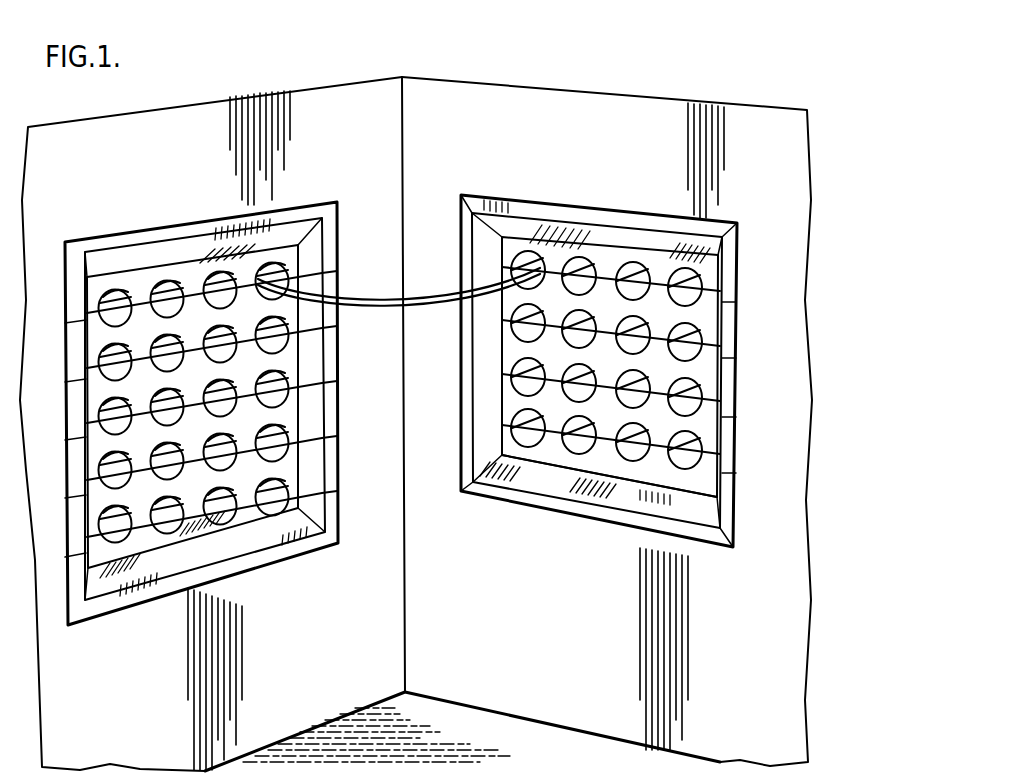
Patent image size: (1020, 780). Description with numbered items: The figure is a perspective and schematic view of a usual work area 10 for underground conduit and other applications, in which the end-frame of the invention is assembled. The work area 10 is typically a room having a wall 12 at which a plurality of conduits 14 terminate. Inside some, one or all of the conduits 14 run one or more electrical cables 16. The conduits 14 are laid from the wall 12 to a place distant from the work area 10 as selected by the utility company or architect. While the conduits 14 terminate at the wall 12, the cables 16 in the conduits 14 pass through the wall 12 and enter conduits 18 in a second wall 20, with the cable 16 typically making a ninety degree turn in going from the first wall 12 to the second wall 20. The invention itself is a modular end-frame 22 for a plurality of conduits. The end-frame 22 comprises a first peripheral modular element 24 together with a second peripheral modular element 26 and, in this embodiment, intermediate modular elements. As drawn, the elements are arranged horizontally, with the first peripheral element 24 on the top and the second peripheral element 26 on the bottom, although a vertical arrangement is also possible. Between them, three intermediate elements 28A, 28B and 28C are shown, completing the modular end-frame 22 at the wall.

The work area 10 is at (541, 744).
The wall 12 is at (744, 290).
The conduits 14 is at (670, 247).
The electrical cables 16 is at (521, 252).
The conduits 18 is at (126, 291).
The second wall 20 is at (116, 232).
The end-frame 22 is at (752, 214).
The first peripheral modular element 24 is at (601, 262).
The second peripheral modular element 26 is at (594, 457).
The intermediate element 28A is at (702, 317).
The intermediate element 28B is at (702, 373).
The intermediate element 28C is at (702, 433).